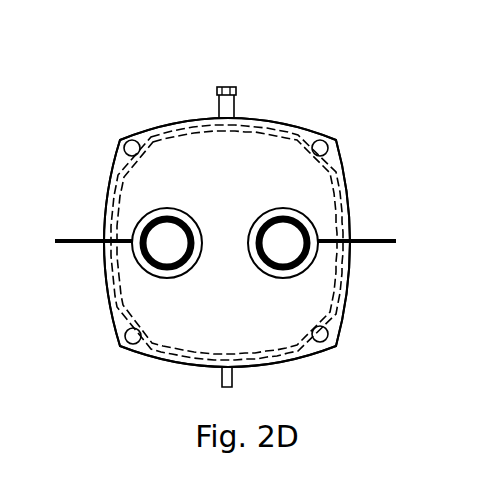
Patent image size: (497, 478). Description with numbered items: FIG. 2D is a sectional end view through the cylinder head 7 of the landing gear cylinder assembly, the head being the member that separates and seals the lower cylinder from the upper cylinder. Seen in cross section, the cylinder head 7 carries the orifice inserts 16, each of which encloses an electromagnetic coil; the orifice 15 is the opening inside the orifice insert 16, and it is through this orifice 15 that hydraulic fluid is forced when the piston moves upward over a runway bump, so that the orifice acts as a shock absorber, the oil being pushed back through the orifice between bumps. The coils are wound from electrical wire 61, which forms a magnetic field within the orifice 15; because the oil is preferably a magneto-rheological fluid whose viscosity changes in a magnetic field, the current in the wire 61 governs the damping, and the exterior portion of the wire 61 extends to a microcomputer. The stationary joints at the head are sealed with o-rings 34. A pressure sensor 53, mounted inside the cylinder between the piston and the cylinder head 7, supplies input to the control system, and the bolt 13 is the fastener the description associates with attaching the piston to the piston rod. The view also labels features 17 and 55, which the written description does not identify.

The cylinder head 7 is at (182, 167).
The bolt 13 is at (332, 162).
The mounting holes 17 is at (147, 137).
The o-rings 34 is at (265, 128).
The top fitting 55 is at (232, 87).
The pressure sensor 53 is at (222, 378).
The orifice 15 is at (160, 235).
The orifice inserts 16 is at (138, 262).
The electrical wire 61 is at (75, 240).